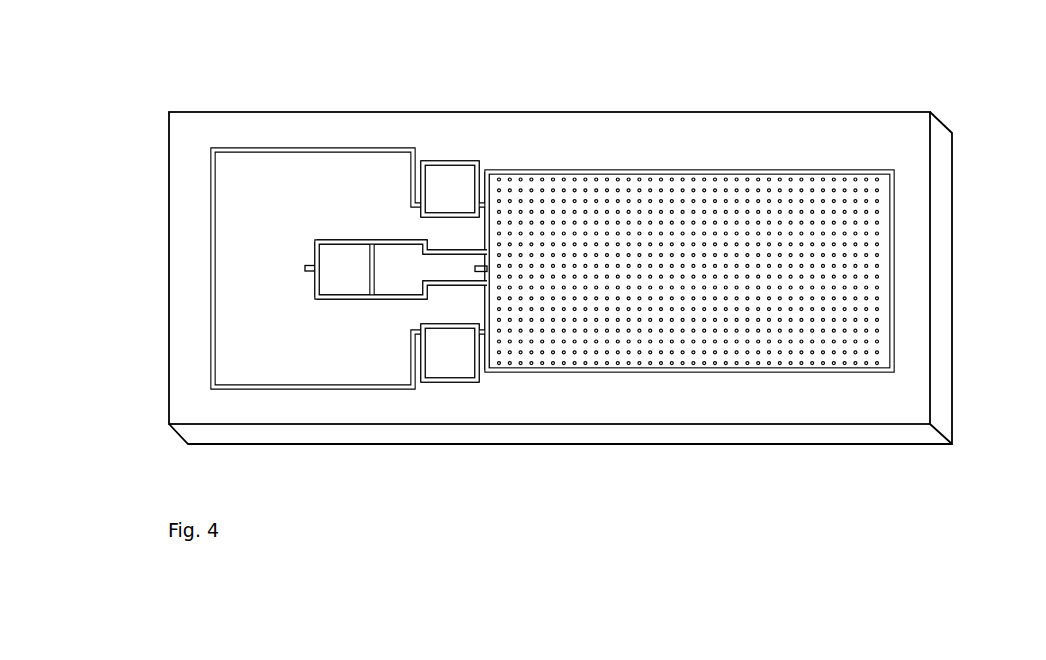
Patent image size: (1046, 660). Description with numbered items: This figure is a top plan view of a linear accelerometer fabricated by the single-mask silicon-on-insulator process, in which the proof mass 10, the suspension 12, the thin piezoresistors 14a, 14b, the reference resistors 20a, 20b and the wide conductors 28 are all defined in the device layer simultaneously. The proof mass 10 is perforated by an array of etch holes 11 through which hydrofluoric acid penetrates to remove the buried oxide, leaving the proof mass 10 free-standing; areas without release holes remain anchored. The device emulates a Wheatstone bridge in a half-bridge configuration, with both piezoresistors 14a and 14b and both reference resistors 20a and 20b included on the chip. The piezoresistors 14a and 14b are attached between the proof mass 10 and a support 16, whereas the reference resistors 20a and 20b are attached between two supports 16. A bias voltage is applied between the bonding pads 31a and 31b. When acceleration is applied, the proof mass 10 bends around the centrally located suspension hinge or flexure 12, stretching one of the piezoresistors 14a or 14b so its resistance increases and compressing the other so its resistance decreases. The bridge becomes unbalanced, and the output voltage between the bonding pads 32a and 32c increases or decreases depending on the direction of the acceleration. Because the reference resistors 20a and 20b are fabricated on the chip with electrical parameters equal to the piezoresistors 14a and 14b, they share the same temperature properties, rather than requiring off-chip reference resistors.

The proof mass 10 is at (638, 338).
The etch holes 11 is at (858, 363).
The suspension 12 is at (577, 180).
The piezoresistor 14a is at (487, 382).
The piezoresistor 14b is at (497, 172).
The support 16 is at (402, 269).
The reference resistor 20a is at (418, 384).
The reference resistor 20b is at (426, 172).
The wide conductor 28 is at (273, 367).
The bonding pad 31a is at (450, 175).
The bonding pad 31b is at (447, 382).
The bonding pad 32a is at (338, 270).
The bonding pad 32c is at (392, 253).